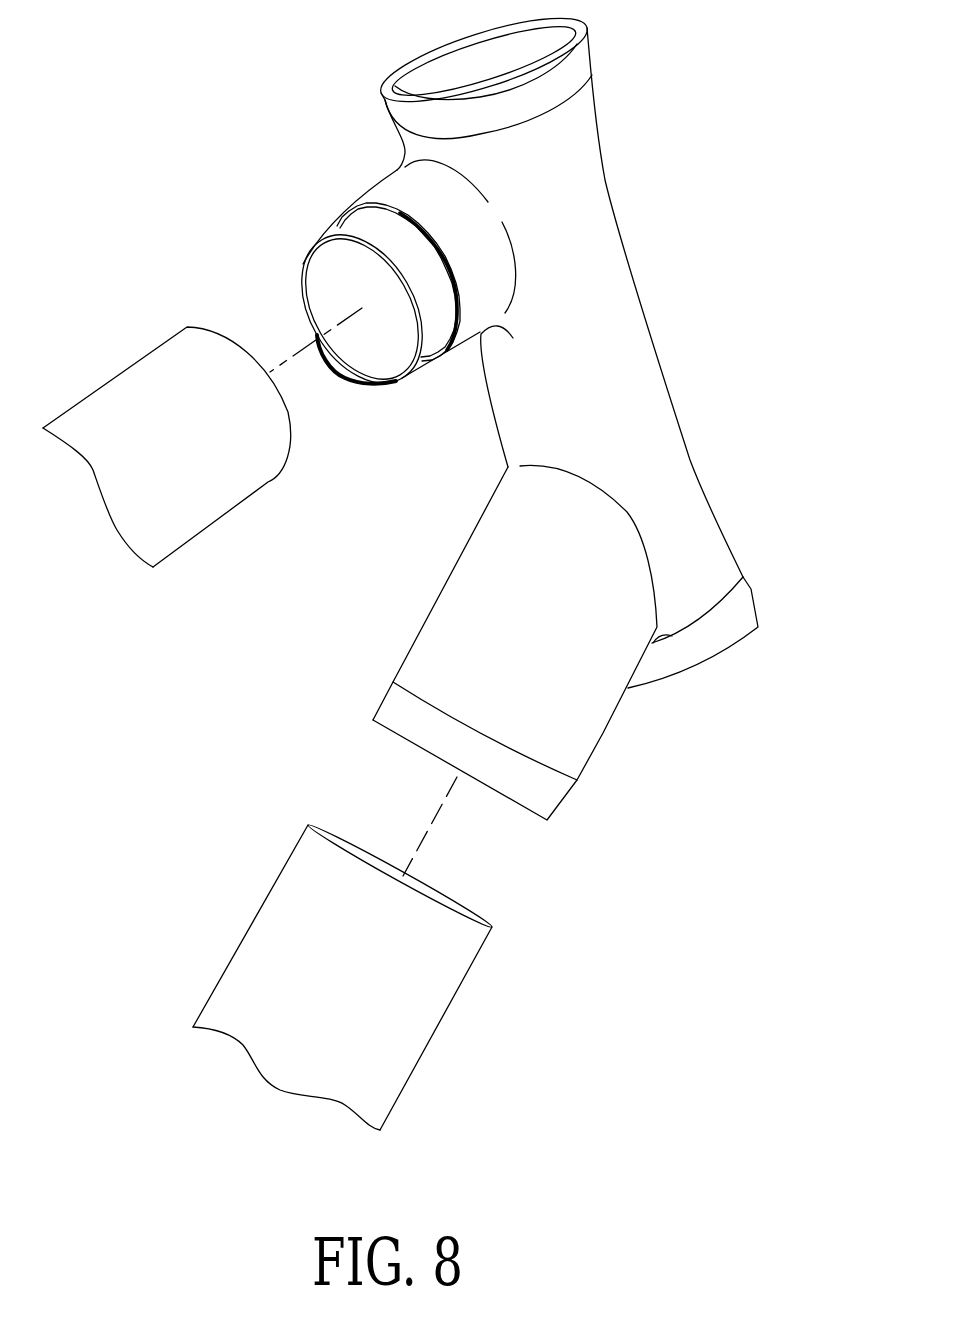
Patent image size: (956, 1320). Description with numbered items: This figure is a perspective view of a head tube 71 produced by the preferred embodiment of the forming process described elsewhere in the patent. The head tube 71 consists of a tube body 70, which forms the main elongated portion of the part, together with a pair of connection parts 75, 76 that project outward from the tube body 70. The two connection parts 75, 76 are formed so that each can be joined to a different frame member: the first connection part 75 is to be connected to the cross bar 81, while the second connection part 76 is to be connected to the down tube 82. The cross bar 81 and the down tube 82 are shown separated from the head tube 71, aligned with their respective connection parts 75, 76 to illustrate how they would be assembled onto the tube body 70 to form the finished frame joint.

The tube body 70 is at (530, 439).
The head tube 71 is at (633, 267).
The connection part 75 is at (372, 190).
The connection part 76 is at (603, 740).
The cross bar 81 is at (177, 520).
The down tube 82 is at (440, 985).